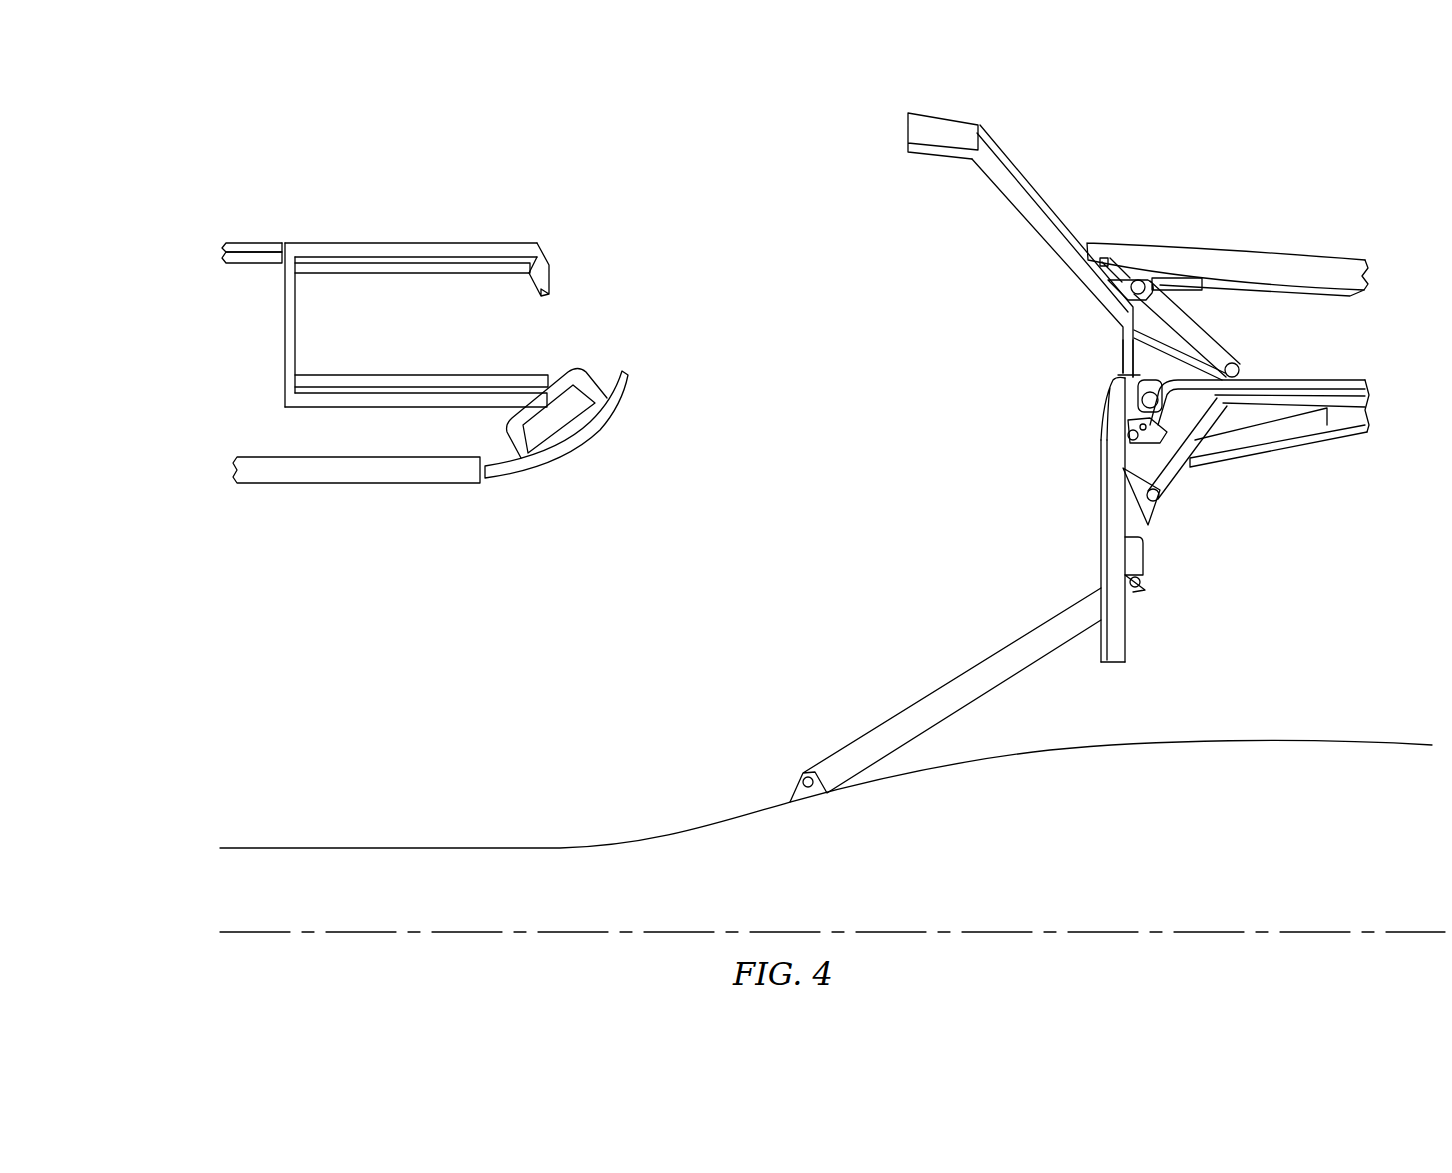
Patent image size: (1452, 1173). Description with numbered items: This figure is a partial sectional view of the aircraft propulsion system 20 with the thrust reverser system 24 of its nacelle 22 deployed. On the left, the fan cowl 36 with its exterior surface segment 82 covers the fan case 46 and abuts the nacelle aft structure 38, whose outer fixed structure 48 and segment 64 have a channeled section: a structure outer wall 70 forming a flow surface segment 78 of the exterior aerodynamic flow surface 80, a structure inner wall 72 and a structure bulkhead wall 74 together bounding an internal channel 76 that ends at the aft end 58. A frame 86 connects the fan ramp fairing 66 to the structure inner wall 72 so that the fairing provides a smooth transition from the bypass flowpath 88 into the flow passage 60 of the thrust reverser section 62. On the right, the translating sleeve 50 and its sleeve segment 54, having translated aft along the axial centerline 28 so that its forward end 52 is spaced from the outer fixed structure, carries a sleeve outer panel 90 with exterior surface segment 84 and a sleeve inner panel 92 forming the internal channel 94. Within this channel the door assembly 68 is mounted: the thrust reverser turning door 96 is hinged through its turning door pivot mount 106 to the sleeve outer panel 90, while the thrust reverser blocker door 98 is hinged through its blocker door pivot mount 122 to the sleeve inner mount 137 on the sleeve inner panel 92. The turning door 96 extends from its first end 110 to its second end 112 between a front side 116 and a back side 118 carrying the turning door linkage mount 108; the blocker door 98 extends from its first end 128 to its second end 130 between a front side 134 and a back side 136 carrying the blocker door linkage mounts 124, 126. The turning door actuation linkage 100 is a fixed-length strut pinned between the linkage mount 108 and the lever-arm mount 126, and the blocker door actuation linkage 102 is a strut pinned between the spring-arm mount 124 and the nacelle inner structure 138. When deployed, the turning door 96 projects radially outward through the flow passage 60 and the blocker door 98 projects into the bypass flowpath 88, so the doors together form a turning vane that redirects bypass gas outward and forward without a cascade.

The aircraft propulsion system 20 is at (222, 152).
The nacelle 22 is at (208, 250).
The thrust reverser system 24 is at (395, 331).
The axial centerline 28 is at (1442, 930).
The fan cowl 36 is at (248, 233).
The nacelle aft structure 38 is at (1135, 140).
The fan case 46 is at (322, 488).
The outer fixed structure 48 is at (451, 221).
The translating sleeve 50 is at (1237, 227).
The forward end of the translating sleeve 52 is at (1087, 243).
The sleeve segment 54 is at (1310, 243).
The aft end of the outer fixed structure 58 is at (540, 253).
The flow passage 60 is at (752, 268).
The thrust reverser section 62 is at (623, 162).
The segment of the outer fixed structure 64 is at (407, 237).
The fan ramp fairing 66 is at (548, 478).
The door assembly 68 is at (1067, 390).
The structure outer wall 70 is at (337, 242).
The structure inner wall 72 is at (310, 408).
The structure bulkhead wall 74 is at (285, 345).
The internal channel 76 is at (508, 323).
The flow surface segment 78 is at (477, 242).
The exterior aerodynamic flow surface 80 is at (225, 237).
The exterior surface segment of the fan cowl 82 is at (242, 242).
The exterior surface segment of the translating sleeve 84 is at (1218, 245).
The frame 86 is at (597, 355).
The bypass flowpath 88 is at (368, 648).
The sleeve outer panel 90 is at (1352, 257).
The sleeve inner panel 92 is at (1367, 428).
The internal channel of the translating sleeve 94 is at (1352, 343).
The thrust reverser turning door 96 is at (1050, 203).
The thrust reverser blocker door 98 is at (1095, 525).
The turning door actuation linkage 100 is at (1190, 477).
The blocker door actuation linkage 102 is at (925, 690).
The turning door pivot mount 106 is at (1153, 312).
The turning door linkage mount 108 is at (1213, 337).
The first end of the turning door panel 110 is at (908, 132).
The second end of the turning door panel 112 is at (1113, 383).
The front side of the turning door panel 116 is at (1007, 202).
The back side of the turning door panel 118 is at (1002, 160).
The blocker door pivot mount 122 is at (1128, 435).
The blocker door linkage mount 124 is at (1143, 557).
The blocker door linkage mount 126 is at (1153, 503).
The first end of the blocker door panel 128 is at (1120, 360).
The second end of the blocker door panel 130 is at (1113, 663).
The front side of the blocker door panel 134 is at (1097, 487).
The back side of the blocker door panel 136 is at (1123, 622).
The sleeve inner mount 137 is at (1343, 378).
The inner structure 138 is at (1333, 740).